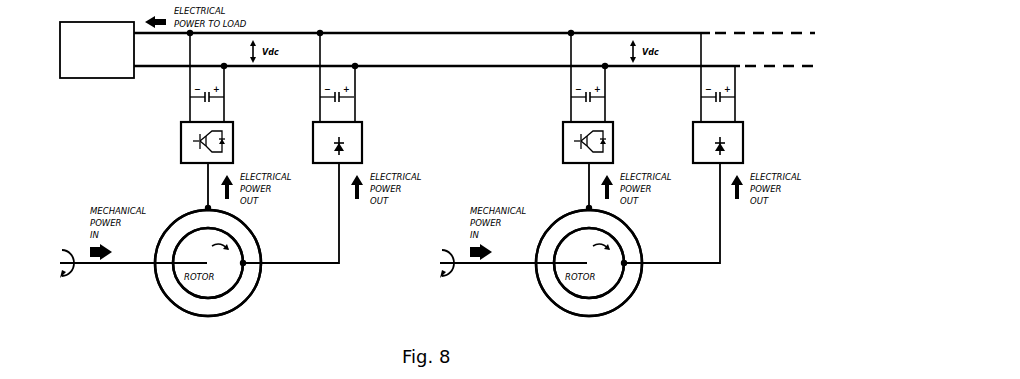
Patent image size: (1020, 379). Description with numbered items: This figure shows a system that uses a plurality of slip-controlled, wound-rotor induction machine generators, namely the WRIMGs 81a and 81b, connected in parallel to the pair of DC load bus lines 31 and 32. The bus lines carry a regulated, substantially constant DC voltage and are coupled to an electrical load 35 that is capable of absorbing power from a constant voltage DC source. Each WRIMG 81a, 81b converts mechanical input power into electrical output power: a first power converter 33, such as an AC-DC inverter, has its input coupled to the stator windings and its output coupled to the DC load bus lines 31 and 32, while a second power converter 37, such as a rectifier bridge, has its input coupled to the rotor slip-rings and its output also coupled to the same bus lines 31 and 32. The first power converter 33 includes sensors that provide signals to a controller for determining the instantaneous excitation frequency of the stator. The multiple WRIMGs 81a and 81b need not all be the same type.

The DC load bus line 31 is at (432, 33).
The DC load bus line 32 is at (445, 67).
The first power converter 33 is at (181, 130).
The electrical load 35 is at (74, 80).
The second power converter 37 is at (362, 128).
The WRIMG 81a is at (202, 258).
The WRIMG 81b is at (588, 258).